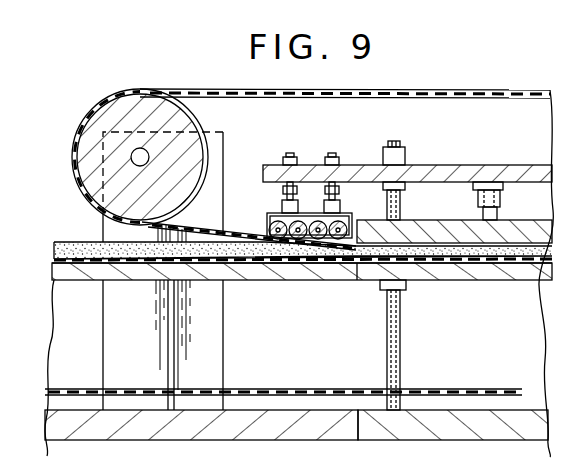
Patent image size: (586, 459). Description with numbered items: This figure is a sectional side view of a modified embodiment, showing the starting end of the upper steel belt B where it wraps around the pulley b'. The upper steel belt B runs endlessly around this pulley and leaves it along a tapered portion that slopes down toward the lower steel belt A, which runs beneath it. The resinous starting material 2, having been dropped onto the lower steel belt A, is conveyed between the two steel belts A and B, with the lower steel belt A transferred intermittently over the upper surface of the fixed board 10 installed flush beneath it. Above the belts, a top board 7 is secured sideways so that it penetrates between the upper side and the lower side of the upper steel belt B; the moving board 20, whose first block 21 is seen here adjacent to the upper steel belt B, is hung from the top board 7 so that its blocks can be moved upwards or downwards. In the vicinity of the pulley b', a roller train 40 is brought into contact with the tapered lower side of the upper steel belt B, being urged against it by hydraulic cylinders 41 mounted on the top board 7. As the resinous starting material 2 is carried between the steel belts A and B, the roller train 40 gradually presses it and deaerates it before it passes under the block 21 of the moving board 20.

The pulley b' is at (125, 157).
The resinous starting material 2 is at (76, 242).
The top board 7 is at (468, 172).
The fixed board 10 is at (469, 281).
The moving board 20 is at (518, 222).
The block 21 is at (446, 228).
The roller train 40 is at (268, 212).
The hydraulic cylinders 41 is at (332, 157).
The lower steel belt A is at (325, 264).
The upper steel belt B is at (212, 233).